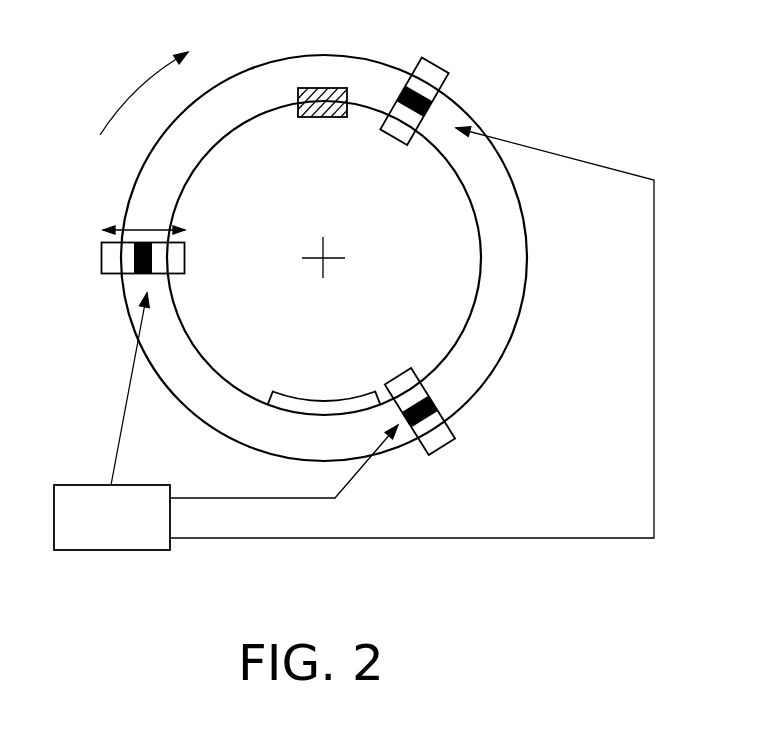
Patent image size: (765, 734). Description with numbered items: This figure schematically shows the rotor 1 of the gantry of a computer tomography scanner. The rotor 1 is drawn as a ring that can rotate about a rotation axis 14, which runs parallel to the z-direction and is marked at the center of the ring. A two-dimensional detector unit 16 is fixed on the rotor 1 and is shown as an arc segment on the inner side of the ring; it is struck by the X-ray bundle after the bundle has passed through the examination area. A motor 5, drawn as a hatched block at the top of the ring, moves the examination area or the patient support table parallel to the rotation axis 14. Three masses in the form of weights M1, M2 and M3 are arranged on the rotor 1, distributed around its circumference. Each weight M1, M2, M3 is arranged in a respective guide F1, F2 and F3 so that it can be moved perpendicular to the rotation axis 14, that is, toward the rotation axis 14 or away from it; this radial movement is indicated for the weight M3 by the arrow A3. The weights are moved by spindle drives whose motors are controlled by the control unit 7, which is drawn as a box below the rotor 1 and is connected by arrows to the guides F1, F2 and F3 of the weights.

The rotor 1 is at (529, 258).
The motor 5 is at (323, 117).
The control unit 7 is at (73, 485).
The rotation axis 14 is at (325, 262).
The detector unit 16 is at (306, 401).
The arrow A3 is at (147, 228).
The guide F1 is at (438, 62).
The guide F2 is at (443, 448).
The guide F3 is at (100, 257).
The weight M1 is at (399, 90).
The weight M2 is at (438, 401).
The weight M3 is at (140, 275).